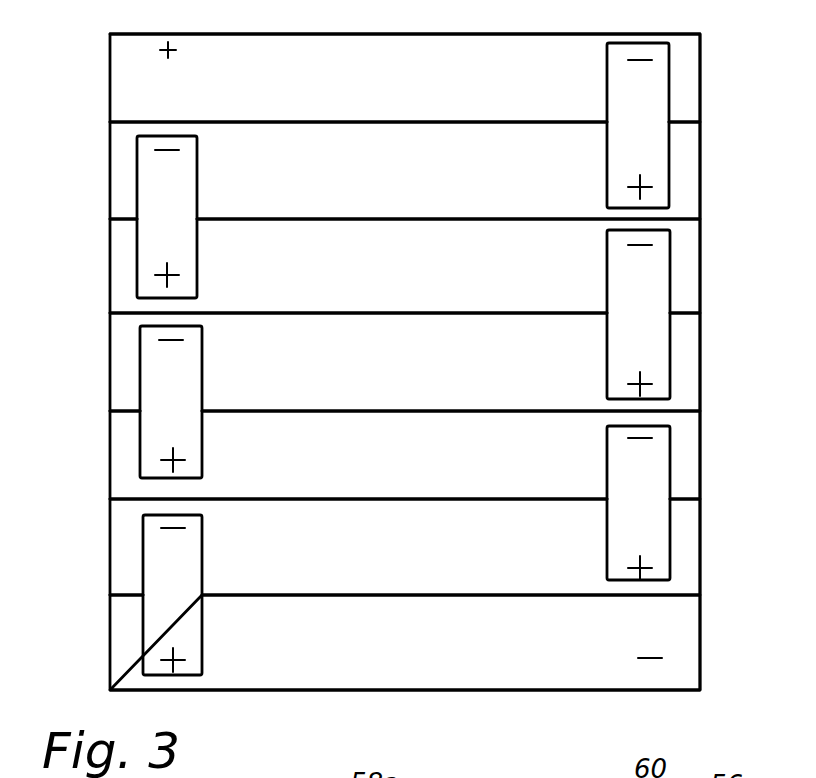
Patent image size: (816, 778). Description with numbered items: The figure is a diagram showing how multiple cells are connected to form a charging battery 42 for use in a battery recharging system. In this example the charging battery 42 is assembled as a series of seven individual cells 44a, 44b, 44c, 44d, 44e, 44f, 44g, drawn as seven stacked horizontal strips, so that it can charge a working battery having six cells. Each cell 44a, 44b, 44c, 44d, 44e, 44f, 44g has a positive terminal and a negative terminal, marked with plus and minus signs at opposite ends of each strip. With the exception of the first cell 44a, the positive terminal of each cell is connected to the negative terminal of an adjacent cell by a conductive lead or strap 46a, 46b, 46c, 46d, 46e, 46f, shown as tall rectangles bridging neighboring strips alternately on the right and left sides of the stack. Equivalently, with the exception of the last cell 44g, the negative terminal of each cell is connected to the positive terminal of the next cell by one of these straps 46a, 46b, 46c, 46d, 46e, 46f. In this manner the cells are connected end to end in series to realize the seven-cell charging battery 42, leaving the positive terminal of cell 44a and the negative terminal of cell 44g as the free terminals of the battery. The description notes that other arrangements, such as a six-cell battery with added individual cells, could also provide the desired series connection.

The charging battery 42 is at (97, 332).
The cell 44a is at (118, 88).
The cell 44b is at (118, 205).
The cell 44c is at (116, 258).
The cell 44d is at (118, 358).
The cell 44e is at (120, 466).
The cell 44f is at (118, 528).
The cell 44g is at (118, 630).
The conductive lead or strap 46a is at (648, 43).
The conductive lead or strap 46b is at (137, 170).
The conductive lead or strap 46c is at (670, 337).
The conductive lead or strap 46d is at (140, 394).
The conductive lead or strap 46e is at (670, 528).
The conductive lead or strap 46f is at (143, 573).